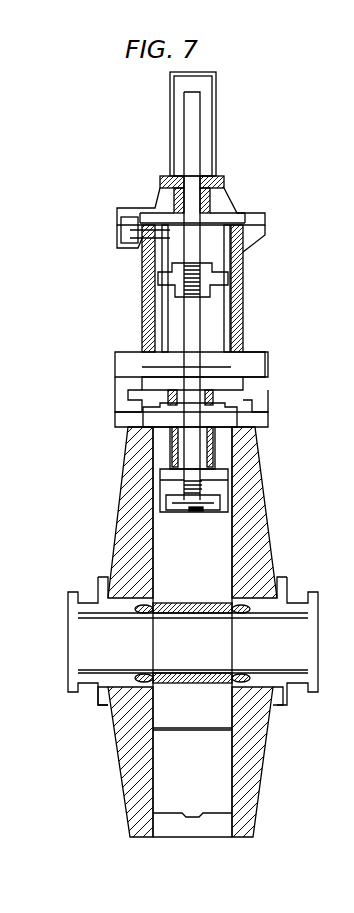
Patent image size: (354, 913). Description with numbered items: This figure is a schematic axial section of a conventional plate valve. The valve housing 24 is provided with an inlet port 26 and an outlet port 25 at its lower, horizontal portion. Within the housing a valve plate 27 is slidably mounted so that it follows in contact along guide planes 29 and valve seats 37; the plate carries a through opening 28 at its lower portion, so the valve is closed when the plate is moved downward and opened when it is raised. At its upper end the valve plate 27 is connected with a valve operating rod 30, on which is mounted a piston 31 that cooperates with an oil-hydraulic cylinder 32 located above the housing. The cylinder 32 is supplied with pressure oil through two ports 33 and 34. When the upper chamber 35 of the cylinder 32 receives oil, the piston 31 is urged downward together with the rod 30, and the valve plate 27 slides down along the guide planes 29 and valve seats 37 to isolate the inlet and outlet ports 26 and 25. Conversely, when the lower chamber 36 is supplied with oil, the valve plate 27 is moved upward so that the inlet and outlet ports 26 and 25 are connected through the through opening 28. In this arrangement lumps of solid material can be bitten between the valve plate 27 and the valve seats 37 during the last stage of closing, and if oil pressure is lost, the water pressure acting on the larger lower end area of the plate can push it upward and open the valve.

The valve housing 24 is at (252, 469).
The outlet port 25 is at (312, 627).
The inlet port 26 is at (80, 638).
The valve plate 27 is at (228, 537).
The through opening 28 is at (180, 660).
The guide planes 29 is at (157, 488).
The valve operating rod 30 is at (198, 335).
The piston 31 is at (228, 278).
The oil-hydraulic cylinder 32 is at (142, 307).
The port 33 is at (122, 232).
The port 34 is at (127, 395).
The upper chamber 35 is at (223, 247).
The lower chamber 36 is at (225, 308).
The valve seats 37 is at (238, 672).